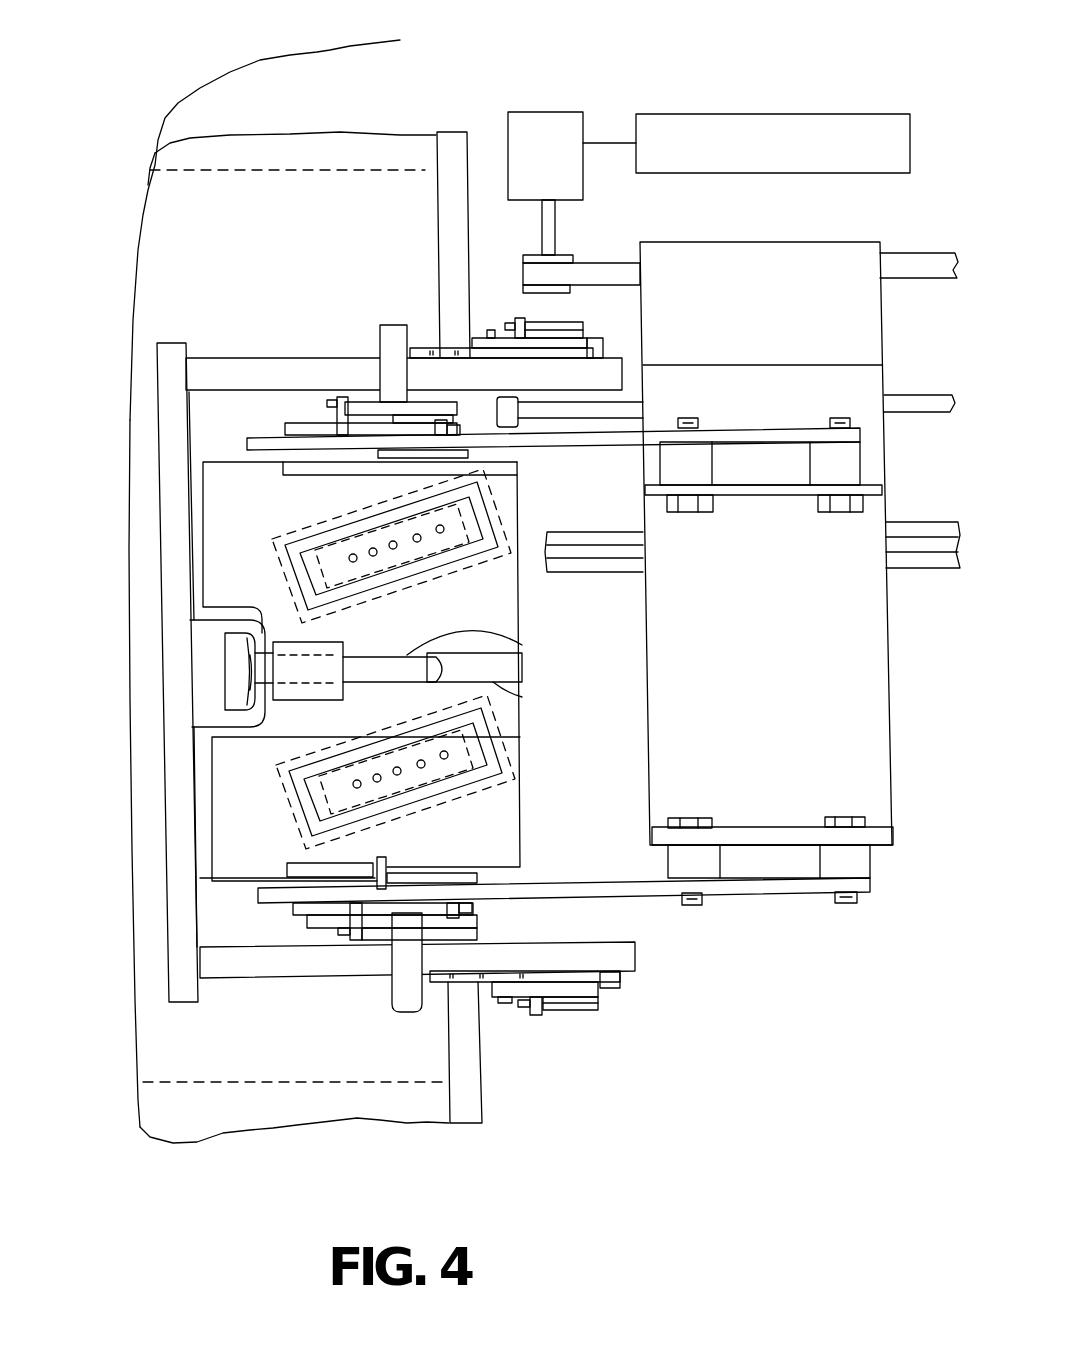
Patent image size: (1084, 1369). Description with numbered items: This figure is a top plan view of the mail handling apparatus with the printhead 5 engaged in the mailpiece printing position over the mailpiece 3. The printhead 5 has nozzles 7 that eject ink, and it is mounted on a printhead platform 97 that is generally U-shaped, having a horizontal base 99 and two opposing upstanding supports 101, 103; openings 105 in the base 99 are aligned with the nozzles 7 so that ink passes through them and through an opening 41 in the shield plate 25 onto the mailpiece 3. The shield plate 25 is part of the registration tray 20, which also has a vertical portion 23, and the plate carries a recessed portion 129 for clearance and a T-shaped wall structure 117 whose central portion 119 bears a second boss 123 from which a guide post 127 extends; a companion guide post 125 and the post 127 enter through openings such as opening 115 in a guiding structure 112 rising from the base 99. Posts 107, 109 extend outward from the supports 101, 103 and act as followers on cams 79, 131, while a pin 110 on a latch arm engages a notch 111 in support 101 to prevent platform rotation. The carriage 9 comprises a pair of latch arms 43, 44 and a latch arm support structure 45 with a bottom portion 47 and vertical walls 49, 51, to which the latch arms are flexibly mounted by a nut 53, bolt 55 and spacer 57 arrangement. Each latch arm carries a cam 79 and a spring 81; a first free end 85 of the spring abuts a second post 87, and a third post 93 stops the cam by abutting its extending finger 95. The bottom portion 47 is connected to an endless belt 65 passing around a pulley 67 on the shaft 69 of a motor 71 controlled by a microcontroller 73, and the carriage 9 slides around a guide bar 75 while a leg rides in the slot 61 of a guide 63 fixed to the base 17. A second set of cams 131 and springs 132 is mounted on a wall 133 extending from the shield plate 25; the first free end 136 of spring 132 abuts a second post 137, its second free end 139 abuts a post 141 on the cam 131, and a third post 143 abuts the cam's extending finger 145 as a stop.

The mailpiece 3 is at (237, 1082).
The printhead 5 is at (415, 588).
The nozzles 7 is at (310, 540).
The carriage assembly 9 is at (737, 947).
The base 17 is at (318, 46).
The registration tray 20 is at (322, 1128).
The vertical portion 23 is at (460, 1123).
The shield plate 25 is at (247, 1140).
The opening 41 is at (522, 597).
The latch arm 43 is at (782, 893).
The latch arm 44 is at (778, 428).
The latch arm support structure 45 is at (761, 224).
The bottom portion 47 is at (877, 297).
The wall 49 is at (782, 495).
The wall 51 is at (778, 826).
The nut 53 is at (687, 512).
The bolt 55 is at (845, 418).
The spacer 57 is at (810, 468).
The slot 61 is at (908, 568).
The guide 63 is at (938, 522).
The endless belt 65 is at (912, 253).
The pulley 67 is at (570, 256).
The shaft 69 is at (555, 227).
The motor 71 is at (550, 112).
The microcontroller 73 is at (760, 113).
The guide bar 75 is at (930, 395).
The cam 79 is at (295, 428).
The spring 81 is at (397, 418).
The first free end 85 is at (372, 400).
The second post 87 is at (340, 395).
The third post 93 is at (437, 432).
The extending finger 95 is at (476, 425).
The printhead platform 97 is at (545, 769).
The horizontal base 99 is at (520, 636).
The support 101 is at (540, 847).
The support 103 is at (512, 430).
The openings 105 is at (360, 606).
The post 107 is at (388, 1003).
The post 109 is at (393, 325).
The pin 110 is at (325, 856).
The notch 111 is at (393, 860).
The guiding structure 112 is at (320, 703).
The through opening 115 is at (288, 655).
The T-shaped wall structure 117 is at (180, 340).
The central portion 119 is at (202, 648).
The second boss 123 is at (225, 685).
The guide post 125 is at (525, 692).
The guide post 127 is at (522, 660).
The recessed portion 129 is at (236, 880).
The cam 131 is at (547, 350).
The spring 132 is at (590, 322).
The wall 133 is at (646, 361).
The first free end 136 is at (478, 347).
The second post 137 is at (492, 333).
The second free end 139 is at (516, 318).
The post 141 is at (488, 338).
The third post 143 is at (590, 330).
The extending finger 145 is at (603, 343).